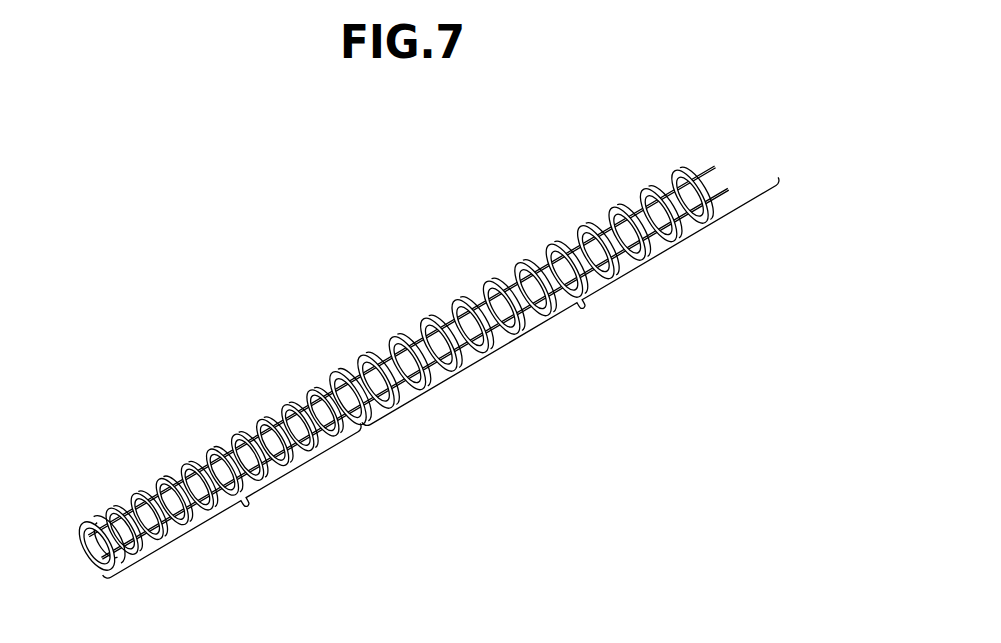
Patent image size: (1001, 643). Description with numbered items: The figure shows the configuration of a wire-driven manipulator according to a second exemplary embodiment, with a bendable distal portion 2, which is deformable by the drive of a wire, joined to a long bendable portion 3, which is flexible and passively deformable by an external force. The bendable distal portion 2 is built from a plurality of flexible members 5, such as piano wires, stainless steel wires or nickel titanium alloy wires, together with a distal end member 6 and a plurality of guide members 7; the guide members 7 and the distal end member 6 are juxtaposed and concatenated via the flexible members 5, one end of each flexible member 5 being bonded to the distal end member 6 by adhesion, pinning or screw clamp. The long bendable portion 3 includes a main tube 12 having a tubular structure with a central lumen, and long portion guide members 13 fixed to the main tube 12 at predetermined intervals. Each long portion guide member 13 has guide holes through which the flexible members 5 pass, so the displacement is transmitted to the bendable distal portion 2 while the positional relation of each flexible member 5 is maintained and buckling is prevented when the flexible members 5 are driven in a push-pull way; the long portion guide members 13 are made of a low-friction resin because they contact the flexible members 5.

The bendable distal portion 2 is at (232, 500).
The long bendable portion 3 is at (570, 301).
The flexible members 5 is at (226, 443).
The distal end member 6 is at (84, 518).
The guide members 7 is at (136, 490).
The main tube 12 is at (430, 334).
The long portion guide members 13 is at (492, 281).